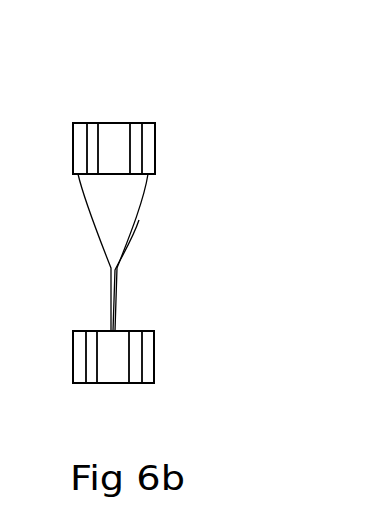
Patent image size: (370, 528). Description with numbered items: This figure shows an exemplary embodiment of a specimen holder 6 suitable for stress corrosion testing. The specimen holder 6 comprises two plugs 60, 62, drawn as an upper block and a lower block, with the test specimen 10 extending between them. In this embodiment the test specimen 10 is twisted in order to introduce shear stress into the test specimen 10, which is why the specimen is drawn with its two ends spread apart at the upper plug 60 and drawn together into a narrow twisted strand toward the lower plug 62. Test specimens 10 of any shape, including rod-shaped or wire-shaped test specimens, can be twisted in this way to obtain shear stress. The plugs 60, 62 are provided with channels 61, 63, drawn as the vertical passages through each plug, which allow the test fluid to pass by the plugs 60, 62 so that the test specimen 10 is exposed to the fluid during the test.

The specimen holder 6 is at (143, 149).
The plug 60 is at (111, 131).
The channels 61 is at (91, 128).
The test specimen 10 is at (93, 200).
The plug 62 is at (117, 343).
The channels 63 is at (135, 352).